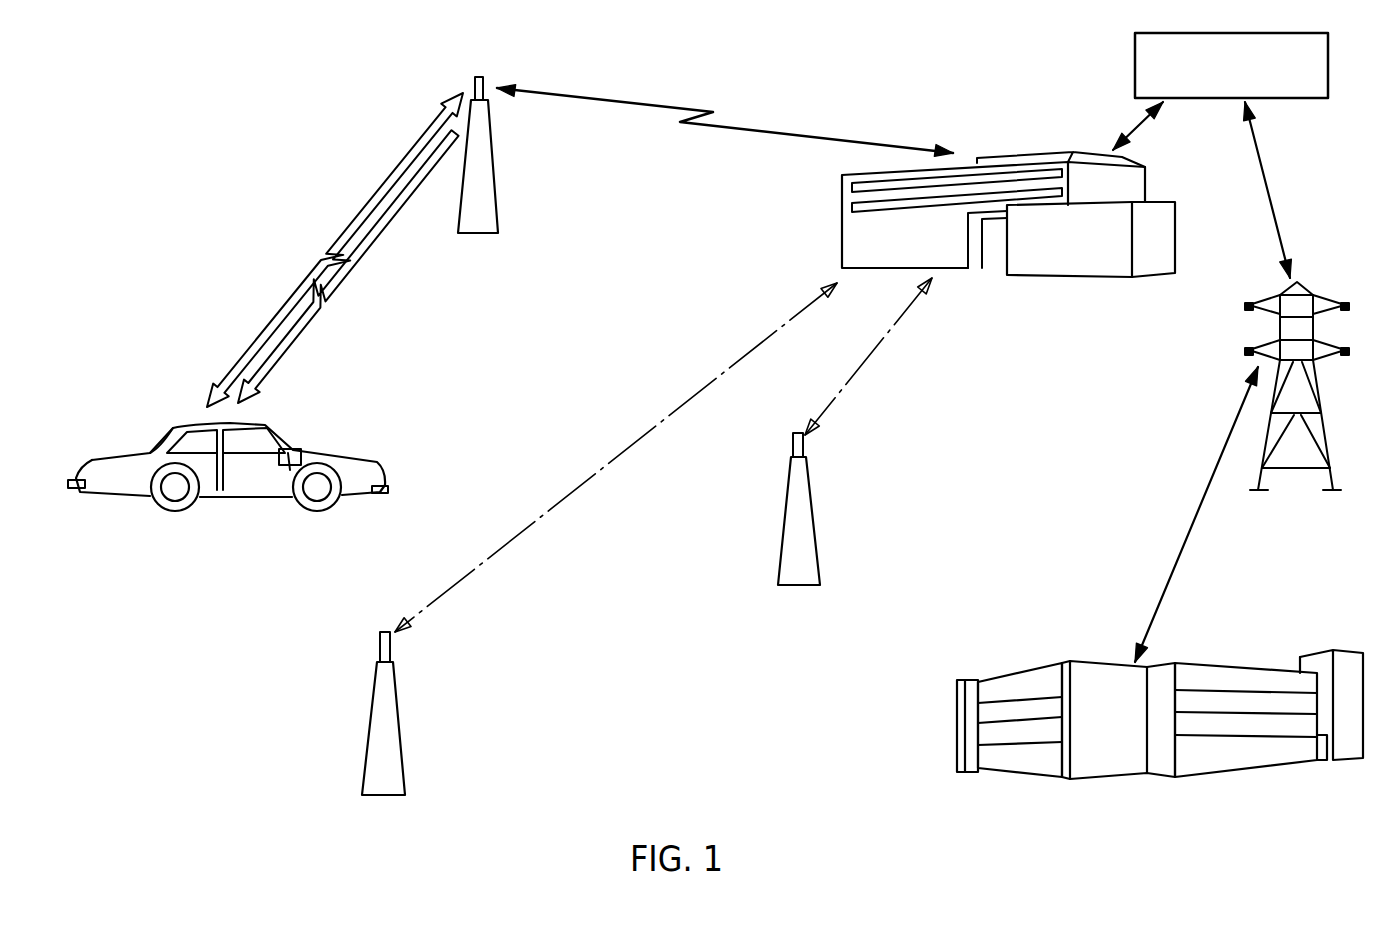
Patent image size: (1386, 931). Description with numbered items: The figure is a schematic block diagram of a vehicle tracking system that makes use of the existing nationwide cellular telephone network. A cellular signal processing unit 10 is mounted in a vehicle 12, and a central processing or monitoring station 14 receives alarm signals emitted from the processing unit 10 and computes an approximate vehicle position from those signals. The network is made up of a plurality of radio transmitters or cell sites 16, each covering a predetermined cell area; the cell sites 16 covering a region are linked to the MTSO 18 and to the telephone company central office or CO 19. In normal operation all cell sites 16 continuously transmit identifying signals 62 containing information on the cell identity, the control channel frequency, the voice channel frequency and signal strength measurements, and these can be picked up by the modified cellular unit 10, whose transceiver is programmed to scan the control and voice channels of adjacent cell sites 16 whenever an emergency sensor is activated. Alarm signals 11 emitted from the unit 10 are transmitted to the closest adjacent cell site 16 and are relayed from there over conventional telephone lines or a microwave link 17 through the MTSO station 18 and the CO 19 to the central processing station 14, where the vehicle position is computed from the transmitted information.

The cellular signal processing unit 10 is at (303, 446).
The alarm signals 11 is at (305, 263).
The vehicle 12 is at (248, 502).
The central processing or monitoring station 14 is at (1073, 660).
The cell sites 16 is at (489, 139).
The telephone lines or microwave link 17 is at (780, 132).
The MTSO 18 is at (1085, 277).
The telephone company central office 19 is at (1135, 58).
The identifying signals 62 is at (380, 242).